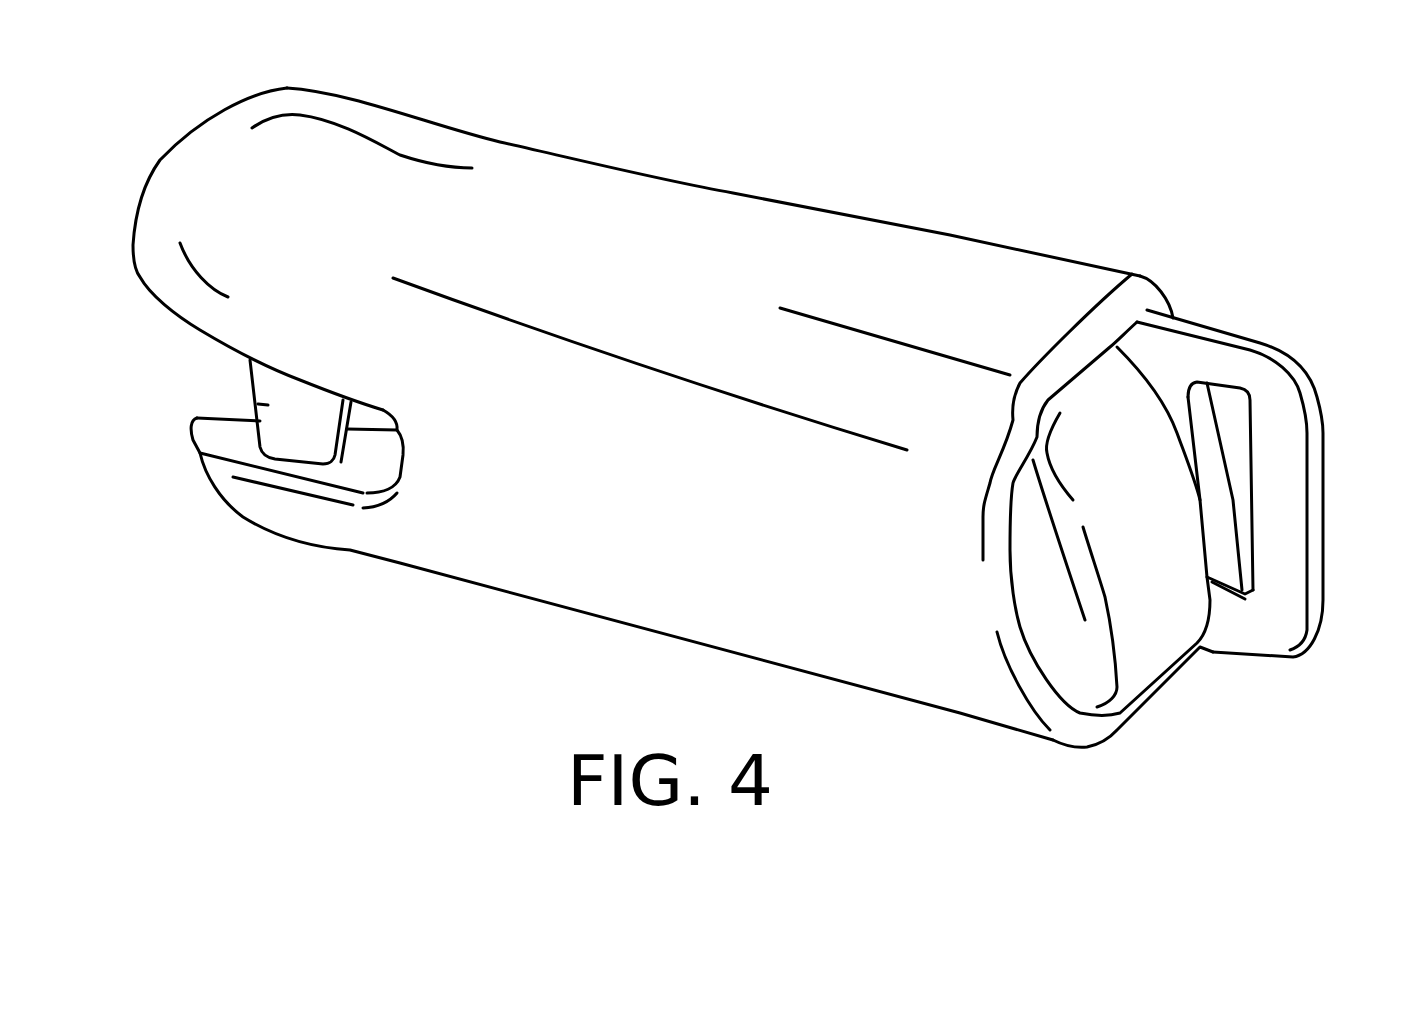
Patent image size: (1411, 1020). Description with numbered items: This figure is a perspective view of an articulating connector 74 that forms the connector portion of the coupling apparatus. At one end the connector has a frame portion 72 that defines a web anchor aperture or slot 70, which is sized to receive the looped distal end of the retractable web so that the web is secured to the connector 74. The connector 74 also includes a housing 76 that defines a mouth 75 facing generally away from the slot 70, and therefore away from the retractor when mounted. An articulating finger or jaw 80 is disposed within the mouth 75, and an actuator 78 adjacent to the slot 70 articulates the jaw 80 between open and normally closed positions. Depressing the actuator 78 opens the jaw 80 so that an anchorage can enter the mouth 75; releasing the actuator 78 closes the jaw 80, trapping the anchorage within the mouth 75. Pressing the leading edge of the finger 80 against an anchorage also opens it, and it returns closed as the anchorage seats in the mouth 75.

The web anchor aperture 70 is at (1229, 410).
The frame portion 72 is at (1285, 515).
The articulating connector 74 is at (862, 185).
The mouth 75 is at (140, 323).
The housing 76 is at (607, 456).
The actuator 78 is at (1147, 645).
The articulating jaw 80 is at (250, 393).